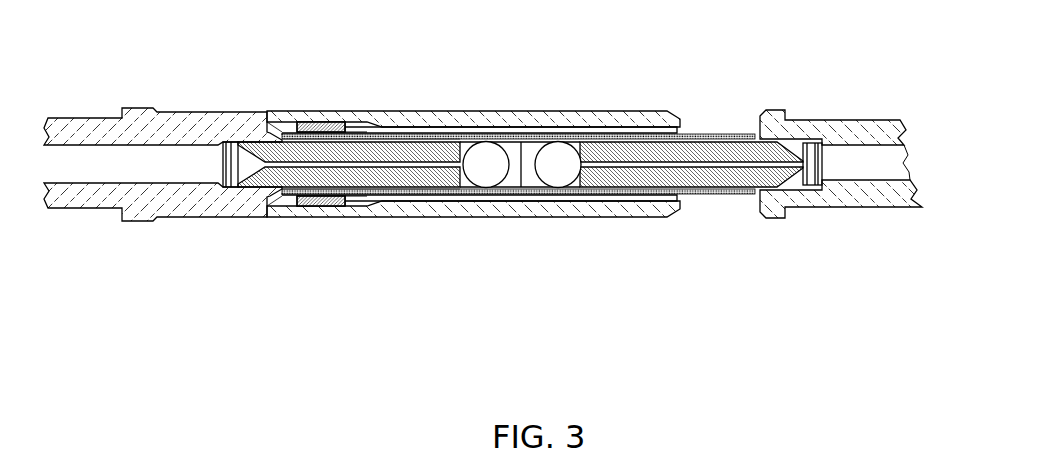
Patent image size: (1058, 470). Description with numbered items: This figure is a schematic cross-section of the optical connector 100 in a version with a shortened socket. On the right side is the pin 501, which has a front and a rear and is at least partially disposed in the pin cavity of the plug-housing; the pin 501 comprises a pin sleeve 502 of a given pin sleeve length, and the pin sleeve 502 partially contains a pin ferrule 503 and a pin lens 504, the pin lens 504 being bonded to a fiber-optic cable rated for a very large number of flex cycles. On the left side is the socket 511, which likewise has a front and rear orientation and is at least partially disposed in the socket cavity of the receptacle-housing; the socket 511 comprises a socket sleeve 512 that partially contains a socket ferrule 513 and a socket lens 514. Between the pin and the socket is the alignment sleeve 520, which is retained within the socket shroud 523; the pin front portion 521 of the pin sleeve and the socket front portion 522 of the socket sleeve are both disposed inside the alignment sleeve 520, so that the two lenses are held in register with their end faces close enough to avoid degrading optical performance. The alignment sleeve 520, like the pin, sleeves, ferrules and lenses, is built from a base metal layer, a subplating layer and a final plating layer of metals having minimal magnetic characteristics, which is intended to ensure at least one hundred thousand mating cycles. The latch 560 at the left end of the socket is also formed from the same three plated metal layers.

The optical connector 100 is at (930, 88).
The pin 501 is at (847, 195).
The pin sleeve 502 is at (700, 191).
The pin ferrule 503 is at (728, 176).
The pin lens 504 is at (560, 165).
The socket 511 is at (188, 200).
The socket sleeve 512 is at (365, 215).
The socket ferrule 513 is at (422, 168).
The socket lens 514 is at (493, 175).
The alignment sleeve 520 is at (525, 197).
The pin front portion 521 is at (636, 194).
The socket front portion 522 is at (460, 192).
The socket shroud 523 is at (533, 113).
The latch 560 is at (137, 222).